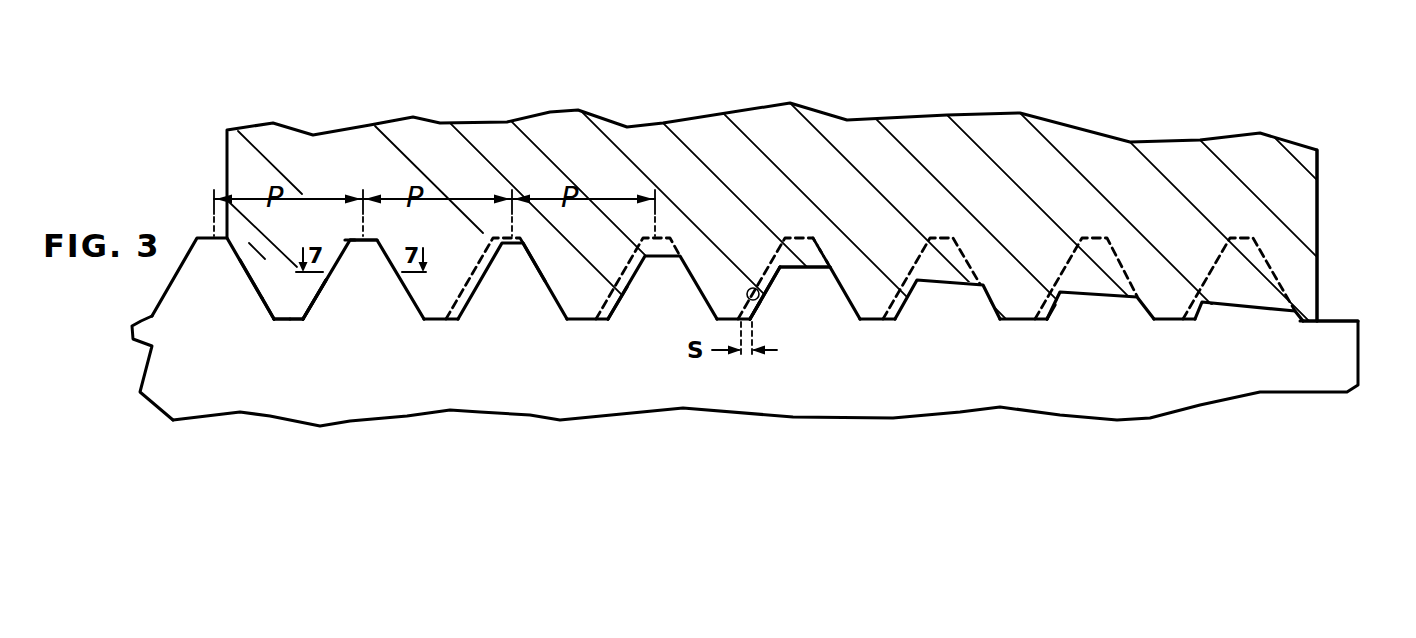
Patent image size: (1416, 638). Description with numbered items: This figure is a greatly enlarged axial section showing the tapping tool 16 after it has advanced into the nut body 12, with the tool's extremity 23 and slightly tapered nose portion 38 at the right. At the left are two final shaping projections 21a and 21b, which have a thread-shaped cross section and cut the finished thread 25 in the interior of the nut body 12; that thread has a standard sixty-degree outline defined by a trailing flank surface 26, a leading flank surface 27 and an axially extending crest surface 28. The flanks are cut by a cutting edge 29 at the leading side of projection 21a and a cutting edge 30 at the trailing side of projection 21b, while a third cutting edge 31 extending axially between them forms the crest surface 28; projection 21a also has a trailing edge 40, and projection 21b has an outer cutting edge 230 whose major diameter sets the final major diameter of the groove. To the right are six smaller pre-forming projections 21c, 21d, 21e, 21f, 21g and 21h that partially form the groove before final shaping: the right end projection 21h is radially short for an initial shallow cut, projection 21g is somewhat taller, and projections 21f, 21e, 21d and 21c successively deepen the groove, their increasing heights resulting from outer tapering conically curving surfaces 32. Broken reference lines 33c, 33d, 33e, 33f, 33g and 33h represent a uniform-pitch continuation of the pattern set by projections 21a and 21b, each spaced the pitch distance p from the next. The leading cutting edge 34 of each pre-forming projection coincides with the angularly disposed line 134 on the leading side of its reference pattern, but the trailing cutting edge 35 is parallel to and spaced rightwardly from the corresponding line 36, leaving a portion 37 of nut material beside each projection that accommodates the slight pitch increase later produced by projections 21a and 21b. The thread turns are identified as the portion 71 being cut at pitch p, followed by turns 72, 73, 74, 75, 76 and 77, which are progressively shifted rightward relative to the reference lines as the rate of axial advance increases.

The nut body 12 is at (763, 123).
The tapping tool 16 is at (903, 403).
The final shaping projection 21a is at (197, 237).
The final shaping projection 21b is at (363, 250).
The pre-forming projection 21c is at (512, 247).
The pre-forming projection 21d is at (661, 263).
The pre-forming projection 21e is at (812, 278).
The pre-forming projection 21f is at (948, 288).
The pre-forming projection 21g is at (1100, 303).
The pre-forming projection 21h is at (1240, 313).
The extremity 23 is at (1360, 368).
The thread 25 is at (295, 276).
The trailing flank surface 26 is at (270, 285).
The leading flank surface 27 is at (347, 242).
The crest surface 28 is at (278, 321).
The cutting edge 29 is at (280, 293).
The cutting edge 30 is at (313, 285).
The cutting edge 31 is at (300, 308).
The outer tapering conically curving surface 32 is at (808, 265).
The reference lines 33c is at (493, 241).
The reference lines 33d is at (673, 236).
The reference lines 33e is at (798, 235).
The reference lines 33f is at (948, 235).
The reference lines 33g is at (1098, 237).
The reference lines 33h is at (1240, 236).
The leading cutting edge 34 is at (545, 278).
The trailing cutting edge 35 is at (754, 300).
The angularly disposed line 36 is at (773, 256).
The portion of the nut body 37 is at (637, 284).
The nose portion 38 is at (1340, 320).
The trailing edge 40 is at (163, 296).
The portion of the thread 71 is at (278, 278).
The second turn 72 is at (444, 295).
The third turn 73 is at (580, 292).
The fourth turn 74 is at (725, 289).
The turn 75 is at (877, 297).
The turn 76 is at (1024, 292).
The turn 77 is at (1172, 291).
The angularly disposed line 134 is at (820, 256).
The outer cutting edge 230 is at (350, 237).